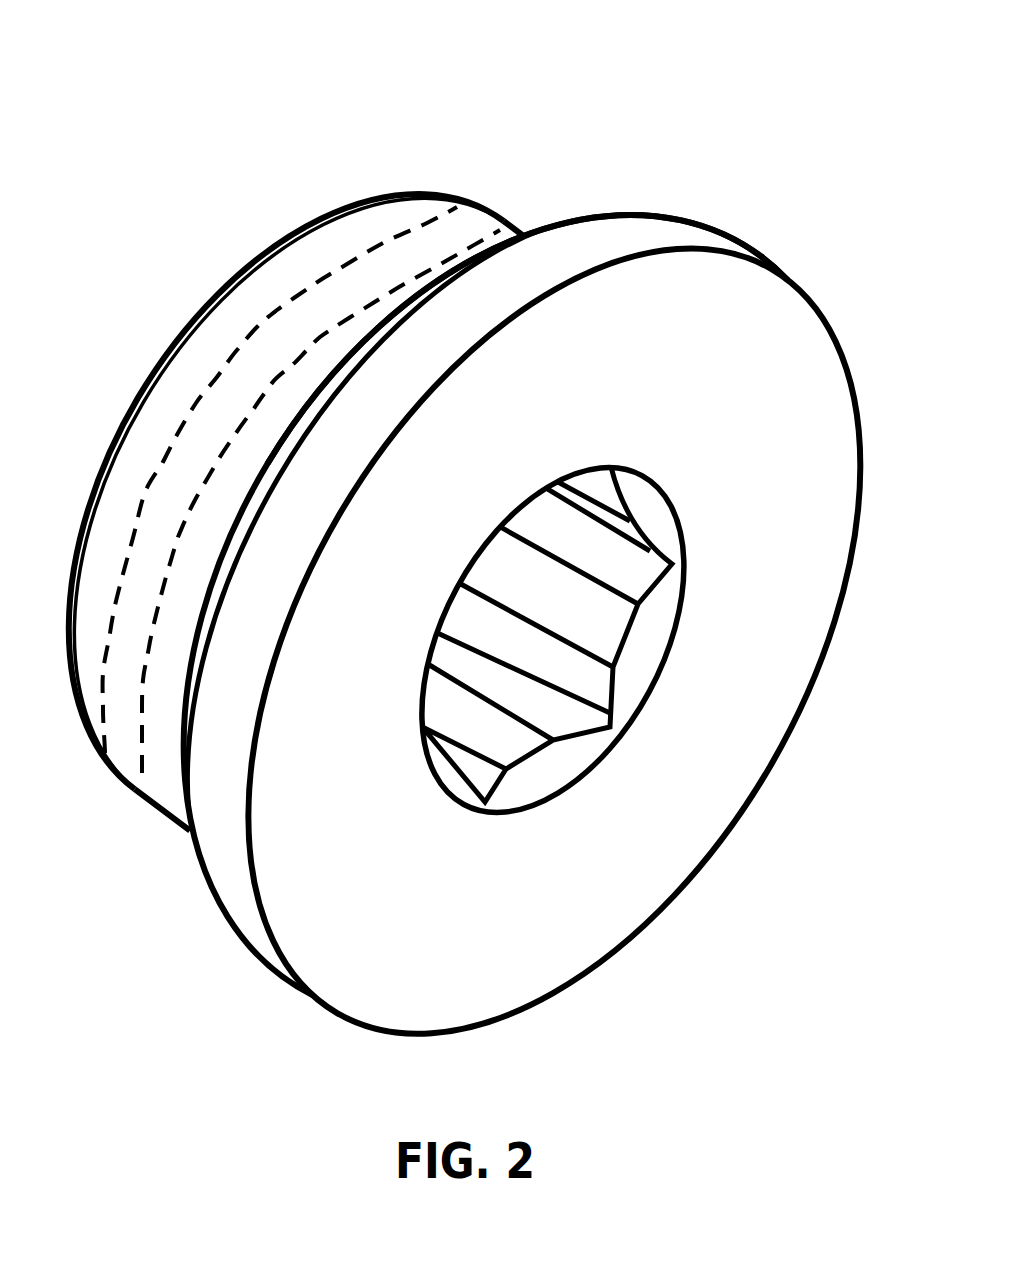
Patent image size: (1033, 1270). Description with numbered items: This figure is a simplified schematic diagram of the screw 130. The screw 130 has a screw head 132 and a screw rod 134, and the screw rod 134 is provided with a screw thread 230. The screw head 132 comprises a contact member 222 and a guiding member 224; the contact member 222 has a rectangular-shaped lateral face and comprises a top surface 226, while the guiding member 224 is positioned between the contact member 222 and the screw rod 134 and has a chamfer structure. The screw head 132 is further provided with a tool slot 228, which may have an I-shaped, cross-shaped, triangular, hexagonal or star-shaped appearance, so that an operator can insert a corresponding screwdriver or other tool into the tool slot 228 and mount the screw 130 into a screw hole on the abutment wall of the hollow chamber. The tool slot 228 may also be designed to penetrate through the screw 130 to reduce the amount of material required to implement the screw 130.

The screw 130 is at (184, 72).
The screw head 132 is at (692, 222).
The screw rod 134 is at (472, 226).
The contact member 222 is at (223, 810).
The guiding member 224 is at (257, 493).
The top surface 226 is at (592, 860).
The tool slot 228 is at (580, 623).
The screw thread 230 is at (333, 273).